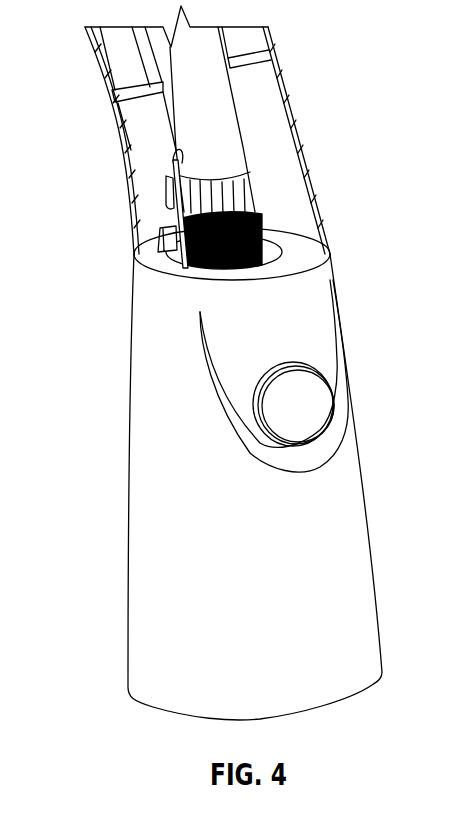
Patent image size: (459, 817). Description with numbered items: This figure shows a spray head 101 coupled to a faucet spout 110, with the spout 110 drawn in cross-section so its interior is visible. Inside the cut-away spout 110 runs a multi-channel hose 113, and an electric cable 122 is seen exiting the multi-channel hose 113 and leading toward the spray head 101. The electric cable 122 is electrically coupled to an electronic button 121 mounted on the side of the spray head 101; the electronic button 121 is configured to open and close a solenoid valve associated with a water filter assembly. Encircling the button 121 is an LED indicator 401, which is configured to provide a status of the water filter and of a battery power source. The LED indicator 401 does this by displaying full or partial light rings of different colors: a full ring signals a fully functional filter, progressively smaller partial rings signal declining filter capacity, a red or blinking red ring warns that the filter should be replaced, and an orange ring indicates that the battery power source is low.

The spray head 101 is at (114, 611).
The faucet spout 110 is at (263, 72).
The multi-channel hose 113 is at (237, 146).
The electronic button 121 is at (320, 407).
The electric cable 122 is at (165, 172).
The LED indicator 401 is at (257, 412).